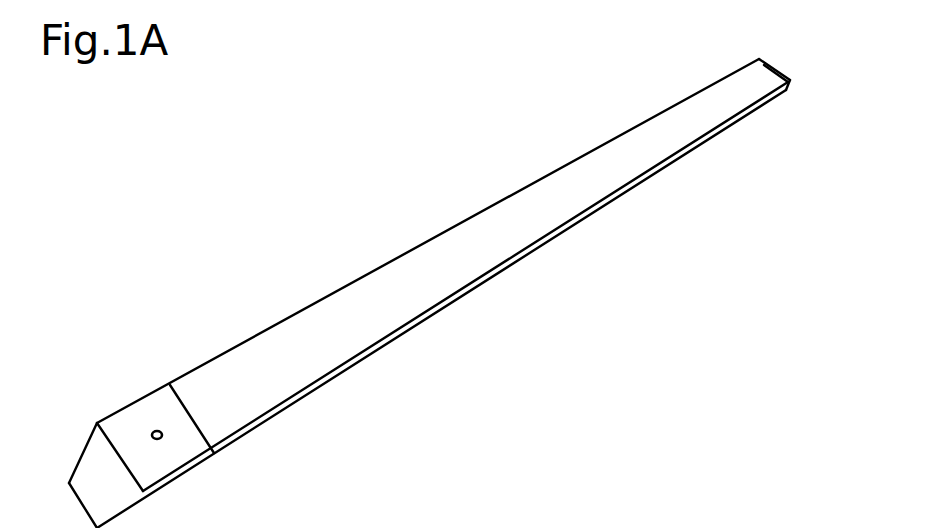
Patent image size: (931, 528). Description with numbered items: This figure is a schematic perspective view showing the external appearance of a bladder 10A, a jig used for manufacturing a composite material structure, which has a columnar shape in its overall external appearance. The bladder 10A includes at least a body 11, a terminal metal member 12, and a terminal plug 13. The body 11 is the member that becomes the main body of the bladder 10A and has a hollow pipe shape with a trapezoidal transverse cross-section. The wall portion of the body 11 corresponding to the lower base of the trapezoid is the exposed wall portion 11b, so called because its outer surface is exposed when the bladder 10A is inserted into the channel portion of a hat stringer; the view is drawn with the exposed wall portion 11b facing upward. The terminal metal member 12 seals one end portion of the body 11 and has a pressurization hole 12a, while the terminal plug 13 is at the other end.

The bladder 10A is at (453, 293).
The body 11 is at (543, 250).
The exposed wall portion 11b is at (411, 293).
The terminal metal member 12 is at (150, 462).
The pressurization hole 12a is at (152, 431).
The terminal plug 13 is at (788, 82).